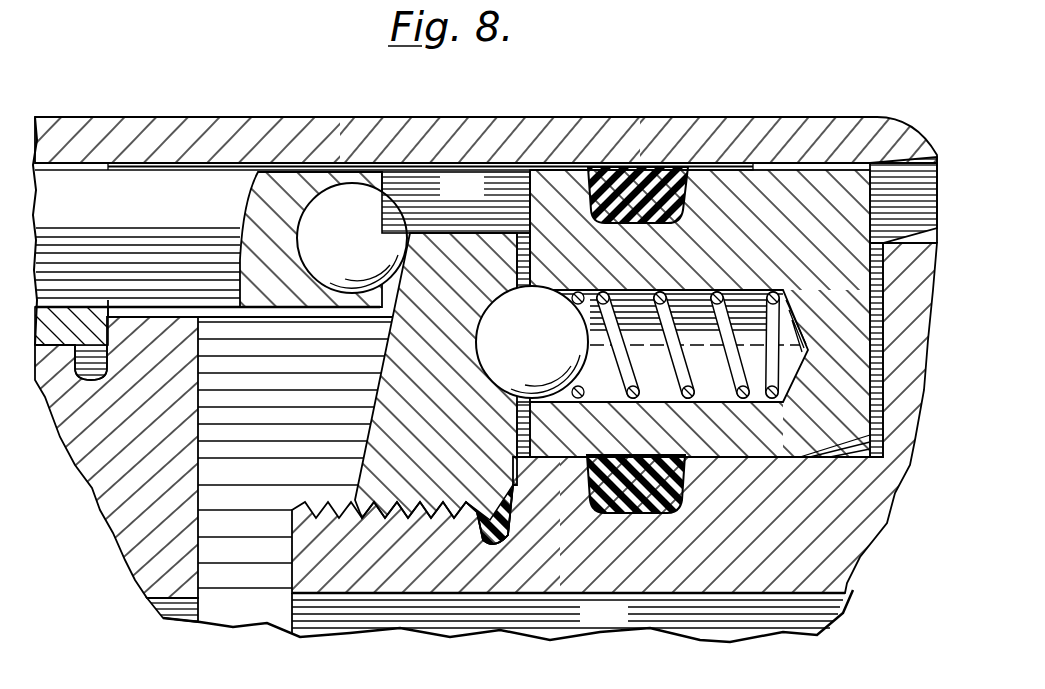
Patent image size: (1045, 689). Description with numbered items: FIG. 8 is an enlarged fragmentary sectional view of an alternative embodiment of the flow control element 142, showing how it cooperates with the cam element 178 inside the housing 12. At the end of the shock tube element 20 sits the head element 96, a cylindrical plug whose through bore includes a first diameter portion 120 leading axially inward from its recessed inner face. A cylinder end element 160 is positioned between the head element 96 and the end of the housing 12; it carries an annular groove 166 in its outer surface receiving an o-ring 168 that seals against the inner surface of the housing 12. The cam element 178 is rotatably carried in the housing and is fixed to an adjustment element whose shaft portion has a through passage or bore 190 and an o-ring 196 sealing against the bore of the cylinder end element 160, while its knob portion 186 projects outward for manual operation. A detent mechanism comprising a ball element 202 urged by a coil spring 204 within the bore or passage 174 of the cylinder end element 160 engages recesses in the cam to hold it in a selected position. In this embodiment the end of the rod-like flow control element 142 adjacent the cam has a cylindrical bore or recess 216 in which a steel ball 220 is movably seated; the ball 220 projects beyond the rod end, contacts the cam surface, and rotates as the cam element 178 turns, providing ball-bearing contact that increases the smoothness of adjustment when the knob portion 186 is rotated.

The housing 12 is at (235, 124).
The shock tube element 20 is at (60, 318).
The head element 96 is at (167, 367).
The first diameter portion 120 is at (163, 618).
The flow control element 142 is at (155, 180).
The cylinder end element 160 is at (822, 178).
The annular groove 166 is at (583, 235).
The o-ring 168 is at (647, 168).
The bore or passage 174 is at (748, 290).
The cam element 178 is at (468, 245).
The knob portion 186 is at (900, 245).
The through passage or bore 190 is at (337, 605).
The o-ring 196 is at (622, 517).
The ball element 202 is at (495, 355).
The coil spring 204 is at (723, 290).
The bore or recess 216 is at (340, 186).
The steel ball 220 is at (400, 232).